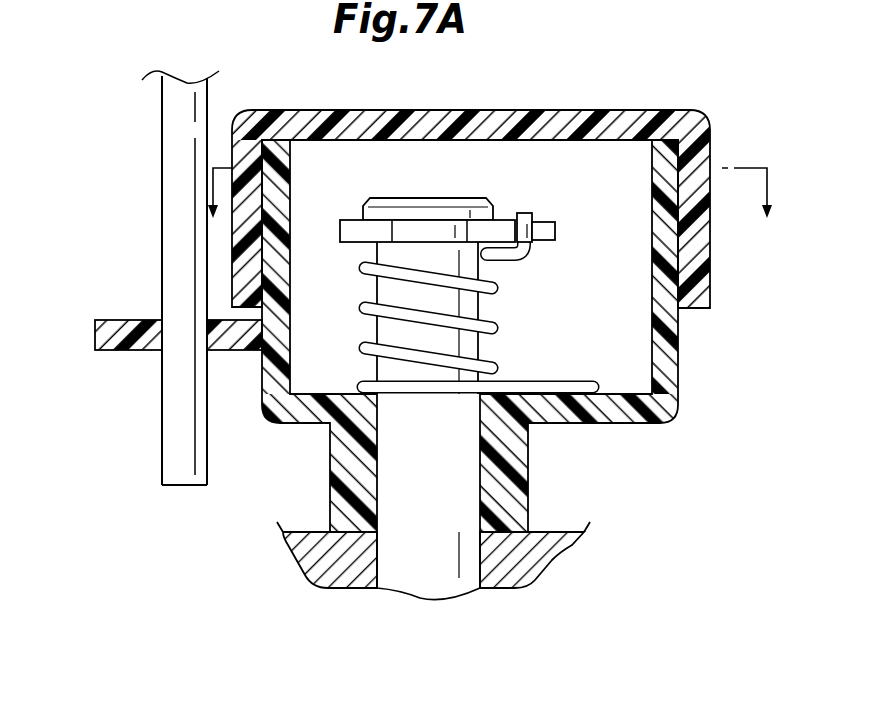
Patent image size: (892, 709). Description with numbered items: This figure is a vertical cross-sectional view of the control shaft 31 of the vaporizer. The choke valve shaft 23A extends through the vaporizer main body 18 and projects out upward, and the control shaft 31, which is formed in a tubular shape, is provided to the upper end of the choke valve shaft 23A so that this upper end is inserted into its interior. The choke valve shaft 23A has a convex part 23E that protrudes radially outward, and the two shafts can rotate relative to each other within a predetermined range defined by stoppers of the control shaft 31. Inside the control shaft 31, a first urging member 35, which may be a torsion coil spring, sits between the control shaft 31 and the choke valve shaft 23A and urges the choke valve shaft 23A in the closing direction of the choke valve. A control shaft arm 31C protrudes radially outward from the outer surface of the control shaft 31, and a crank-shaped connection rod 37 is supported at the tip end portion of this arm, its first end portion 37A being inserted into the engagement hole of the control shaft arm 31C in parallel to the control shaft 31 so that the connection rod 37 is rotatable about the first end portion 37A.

The control shaft 31 is at (558, 122).
The control shaft arm 31C is at (124, 344).
The connection rod 37 is at (162, 467).
The first end portion 37A is at (162, 278).
The convex part 23E is at (553, 232).
The first urging member 35 is at (493, 323).
The vaporizer main body 18 is at (557, 537).
The choke valve shaft 23A is at (382, 560).